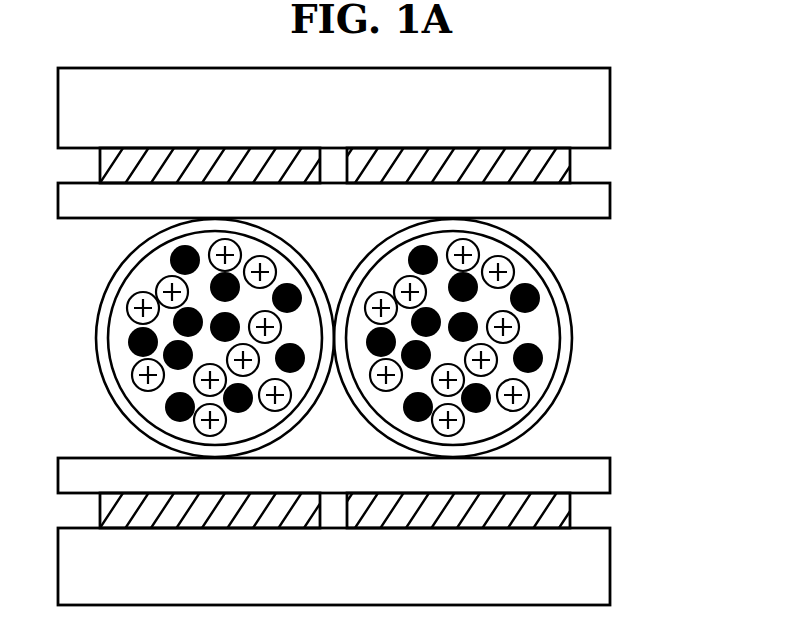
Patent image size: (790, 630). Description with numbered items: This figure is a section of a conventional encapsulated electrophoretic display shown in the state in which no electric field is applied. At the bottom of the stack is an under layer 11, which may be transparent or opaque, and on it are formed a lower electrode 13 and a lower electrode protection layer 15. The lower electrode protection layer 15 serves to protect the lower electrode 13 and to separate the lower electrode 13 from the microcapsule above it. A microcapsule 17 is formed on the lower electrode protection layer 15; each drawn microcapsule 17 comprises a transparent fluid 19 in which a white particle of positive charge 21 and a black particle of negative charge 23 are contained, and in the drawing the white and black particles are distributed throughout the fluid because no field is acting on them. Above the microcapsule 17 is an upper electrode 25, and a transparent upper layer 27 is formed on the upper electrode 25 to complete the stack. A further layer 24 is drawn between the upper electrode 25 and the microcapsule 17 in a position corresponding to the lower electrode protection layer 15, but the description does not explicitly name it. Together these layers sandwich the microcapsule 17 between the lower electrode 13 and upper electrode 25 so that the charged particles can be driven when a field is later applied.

The under layer 11 is at (607, 578).
The lower electrode 13 is at (567, 507).
The lower electrode protection layer 15 is at (598, 473).
The microcapsule 17 is at (560, 282).
The transparent fluid 19 is at (542, 328).
The white particle of positive charge 21 is at (513, 397).
The black particle of negative charge 23 is at (540, 362).
The upper insulating layer 24 is at (597, 205).
The upper electrode 25 is at (567, 168).
The transparent upper layer 27 is at (607, 99).